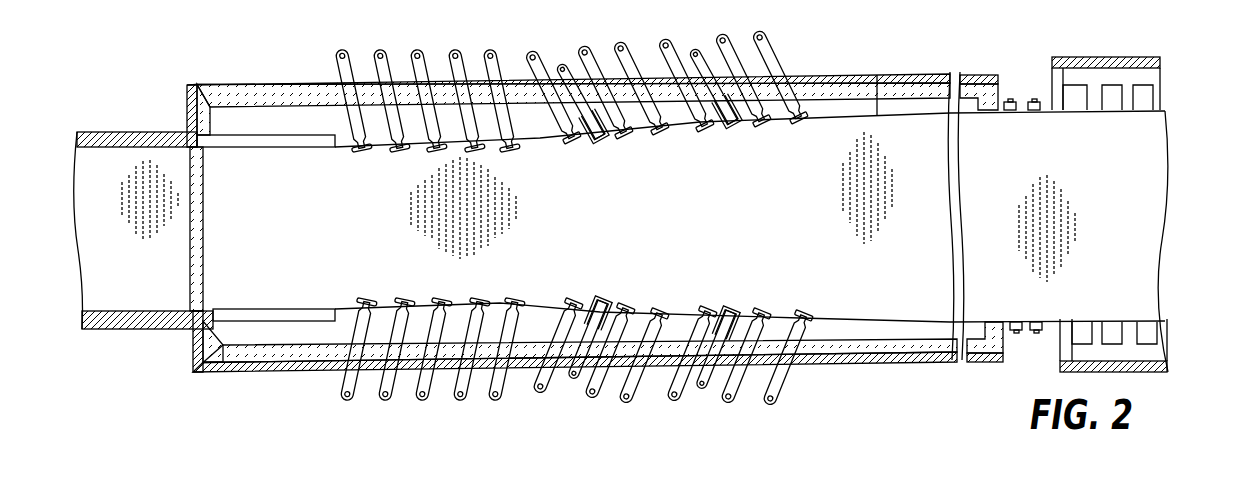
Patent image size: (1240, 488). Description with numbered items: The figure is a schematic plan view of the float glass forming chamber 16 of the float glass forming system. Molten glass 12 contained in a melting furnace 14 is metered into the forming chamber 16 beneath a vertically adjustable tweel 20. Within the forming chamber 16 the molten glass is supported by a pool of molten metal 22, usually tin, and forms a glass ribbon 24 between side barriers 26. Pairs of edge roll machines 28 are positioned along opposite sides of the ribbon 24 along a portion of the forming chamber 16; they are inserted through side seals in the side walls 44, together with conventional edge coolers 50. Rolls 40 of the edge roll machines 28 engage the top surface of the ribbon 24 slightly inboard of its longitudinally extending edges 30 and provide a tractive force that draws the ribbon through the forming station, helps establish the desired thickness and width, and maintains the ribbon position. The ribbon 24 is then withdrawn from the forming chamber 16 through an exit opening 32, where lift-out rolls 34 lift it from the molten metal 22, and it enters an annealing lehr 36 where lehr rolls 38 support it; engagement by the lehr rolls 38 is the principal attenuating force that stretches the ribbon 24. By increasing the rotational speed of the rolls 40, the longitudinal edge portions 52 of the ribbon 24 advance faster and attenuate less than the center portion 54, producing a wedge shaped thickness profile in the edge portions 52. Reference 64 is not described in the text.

The molten glass 12 is at (116, 243).
The melting furnace 14 is at (118, 330).
The float forming chamber 16 is at (812, 76).
The tweel 20 is at (190, 276).
The molten metal 22 is at (840, 100).
The glass ribbon 24 is at (324, 221).
The side barriers 26 is at (222, 135).
The edge roll machines 28 is at (616, 44).
The longitudinally extending edges 30 is at (828, 367).
The exit opening 32 is at (1003, 340).
The lift-out rolls 34 is at (1022, 100).
The annealing lehr 36 is at (1126, 57).
The lehr rolls 38 is at (1150, 86).
The rolls 40 is at (430, 153).
The side walls 44 is at (857, 369).
The edge coolers 50 is at (617, 145).
The longitudinal edge portions 52 is at (553, 163).
The center portion 54 is at (755, 211).
The seam 64 is at (878, 78).